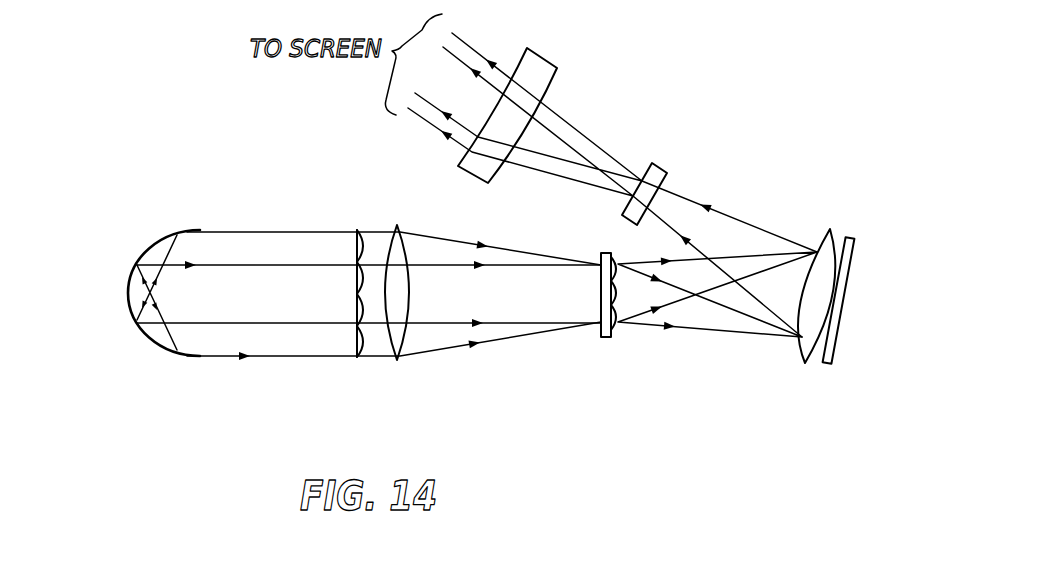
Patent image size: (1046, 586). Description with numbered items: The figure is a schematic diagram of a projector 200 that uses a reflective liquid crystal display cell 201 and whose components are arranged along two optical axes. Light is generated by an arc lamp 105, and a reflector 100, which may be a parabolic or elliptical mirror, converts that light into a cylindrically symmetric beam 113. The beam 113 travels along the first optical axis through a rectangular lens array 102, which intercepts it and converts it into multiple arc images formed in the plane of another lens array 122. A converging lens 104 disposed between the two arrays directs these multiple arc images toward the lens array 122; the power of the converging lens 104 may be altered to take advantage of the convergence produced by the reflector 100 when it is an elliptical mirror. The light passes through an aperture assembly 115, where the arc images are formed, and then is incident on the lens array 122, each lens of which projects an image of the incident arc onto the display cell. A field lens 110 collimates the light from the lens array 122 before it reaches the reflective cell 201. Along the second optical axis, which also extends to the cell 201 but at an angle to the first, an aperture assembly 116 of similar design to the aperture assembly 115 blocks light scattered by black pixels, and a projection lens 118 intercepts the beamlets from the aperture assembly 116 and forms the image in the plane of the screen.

The reflector 100 is at (128, 306).
The arc lamp 105 is at (147, 292).
The beam 113 is at (282, 357).
The lens array 102 is at (362, 225).
The converging lens 104 is at (402, 358).
The aperture assembly 115 is at (602, 333).
The lens array 122 is at (615, 253).
The projector 200 is at (684, 391).
The field lens 110 is at (832, 232).
The reflective liquid crystal display cell 201 is at (843, 280).
The aperture assembly 116 is at (660, 170).
The projection lens 118 is at (552, 57).